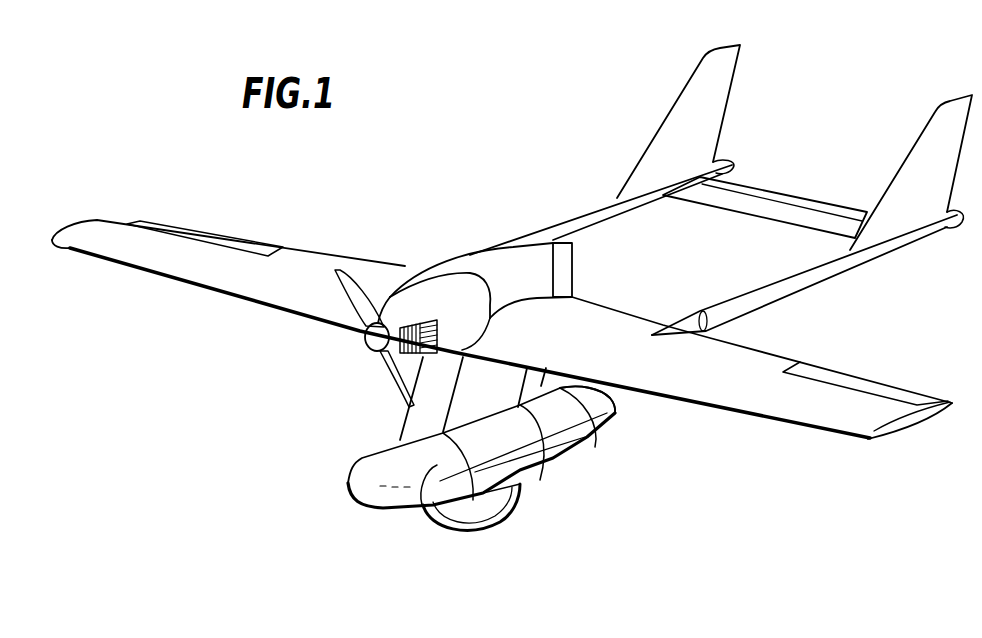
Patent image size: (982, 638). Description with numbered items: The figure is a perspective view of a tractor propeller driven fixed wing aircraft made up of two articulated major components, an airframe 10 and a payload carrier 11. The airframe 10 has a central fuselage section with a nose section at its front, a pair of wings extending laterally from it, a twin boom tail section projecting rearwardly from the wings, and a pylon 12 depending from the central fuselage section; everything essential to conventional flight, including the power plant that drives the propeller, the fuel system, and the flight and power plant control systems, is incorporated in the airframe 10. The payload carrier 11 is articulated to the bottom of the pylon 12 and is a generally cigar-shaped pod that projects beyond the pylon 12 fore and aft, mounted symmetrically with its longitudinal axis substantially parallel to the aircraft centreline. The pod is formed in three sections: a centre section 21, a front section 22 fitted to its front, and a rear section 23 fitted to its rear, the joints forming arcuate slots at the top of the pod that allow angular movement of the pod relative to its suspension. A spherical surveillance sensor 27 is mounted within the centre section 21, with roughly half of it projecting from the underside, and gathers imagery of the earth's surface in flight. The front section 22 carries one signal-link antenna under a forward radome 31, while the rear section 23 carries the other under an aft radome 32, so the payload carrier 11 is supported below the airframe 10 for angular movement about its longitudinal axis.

The airframe 10 is at (495, 278).
The payload carrier 11 is at (480, 472).
The pylon 12 is at (417, 413).
The centre section 21 is at (487, 477).
The front section 22 is at (437, 465).
The rear section 23 is at (563, 440).
The spherical surveillance sensor 27 is at (475, 520).
The forward radome 31 is at (367, 478).
The aft radome 32 is at (608, 417).